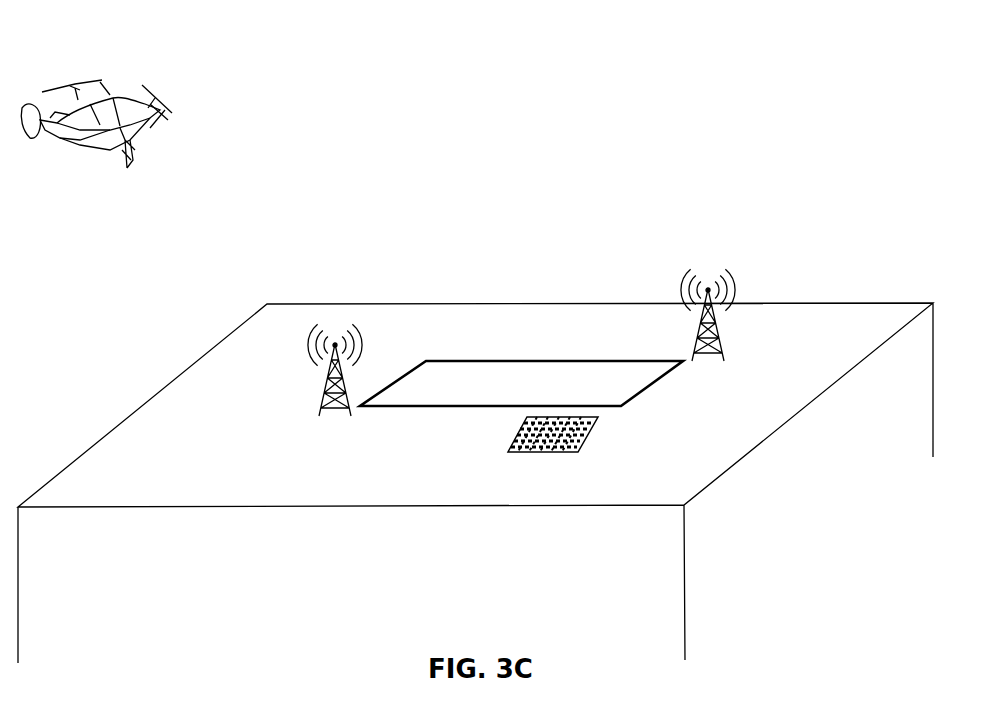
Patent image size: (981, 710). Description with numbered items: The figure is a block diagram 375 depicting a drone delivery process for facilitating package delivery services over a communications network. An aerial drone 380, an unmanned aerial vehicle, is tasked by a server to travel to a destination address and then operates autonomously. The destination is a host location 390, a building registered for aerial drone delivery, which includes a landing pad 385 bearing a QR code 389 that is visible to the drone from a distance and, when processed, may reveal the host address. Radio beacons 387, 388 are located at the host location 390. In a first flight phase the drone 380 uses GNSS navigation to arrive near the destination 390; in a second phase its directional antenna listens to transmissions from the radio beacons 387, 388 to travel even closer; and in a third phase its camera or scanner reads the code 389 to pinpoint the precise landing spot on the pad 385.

The block diagram 375 is at (837, 159).
The aerial drone 380 is at (140, 75).
The landing pad 385 is at (528, 360).
The radio beacon 387 is at (327, 424).
The radio beacon 388 is at (712, 368).
The QR code 389 is at (544, 456).
The host location 390 is at (890, 301).